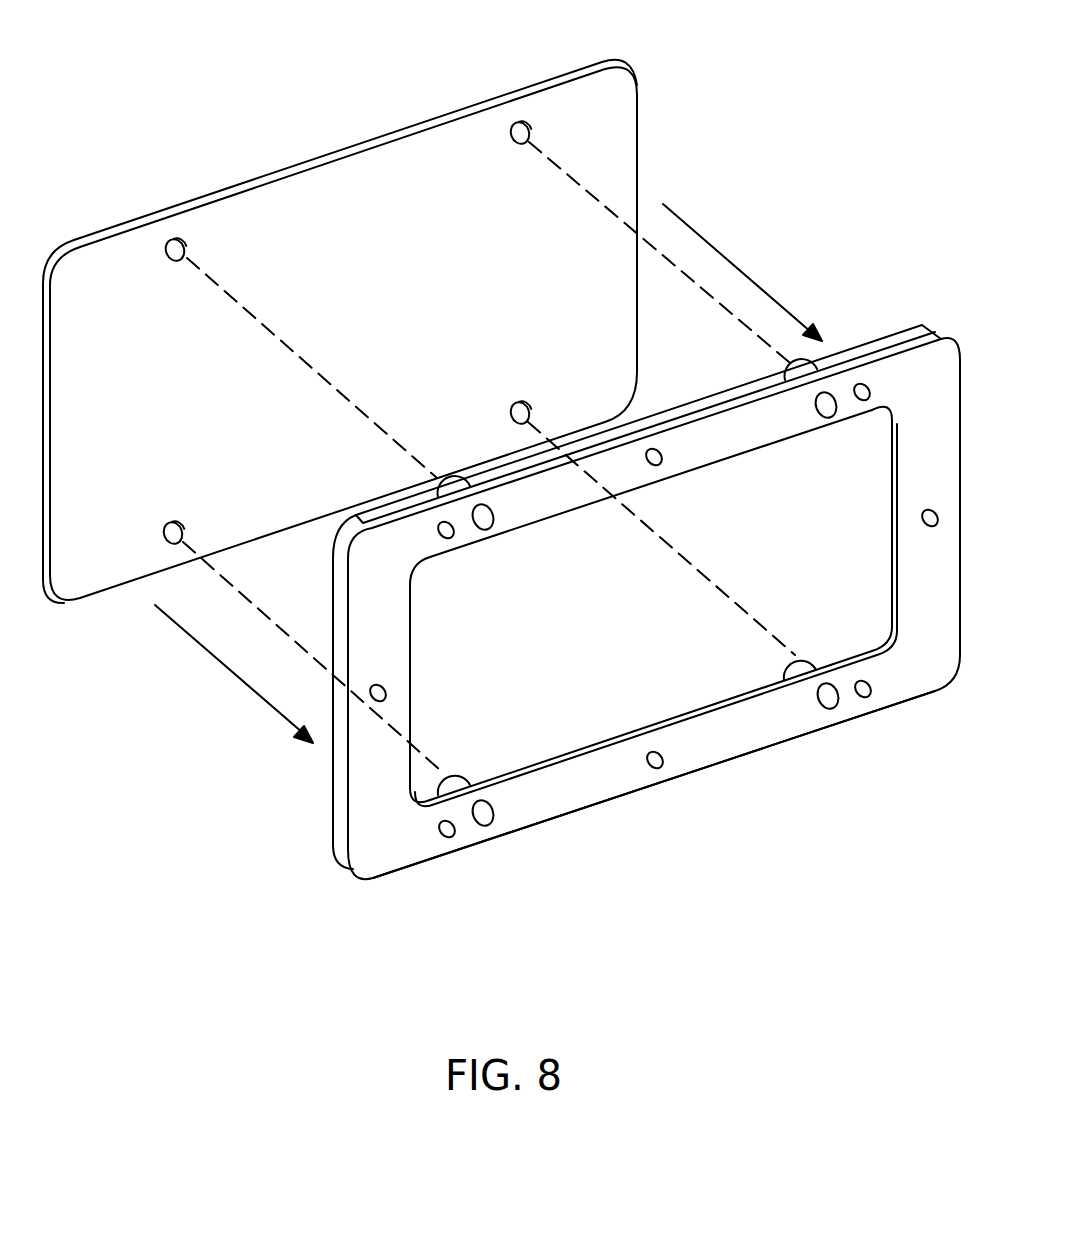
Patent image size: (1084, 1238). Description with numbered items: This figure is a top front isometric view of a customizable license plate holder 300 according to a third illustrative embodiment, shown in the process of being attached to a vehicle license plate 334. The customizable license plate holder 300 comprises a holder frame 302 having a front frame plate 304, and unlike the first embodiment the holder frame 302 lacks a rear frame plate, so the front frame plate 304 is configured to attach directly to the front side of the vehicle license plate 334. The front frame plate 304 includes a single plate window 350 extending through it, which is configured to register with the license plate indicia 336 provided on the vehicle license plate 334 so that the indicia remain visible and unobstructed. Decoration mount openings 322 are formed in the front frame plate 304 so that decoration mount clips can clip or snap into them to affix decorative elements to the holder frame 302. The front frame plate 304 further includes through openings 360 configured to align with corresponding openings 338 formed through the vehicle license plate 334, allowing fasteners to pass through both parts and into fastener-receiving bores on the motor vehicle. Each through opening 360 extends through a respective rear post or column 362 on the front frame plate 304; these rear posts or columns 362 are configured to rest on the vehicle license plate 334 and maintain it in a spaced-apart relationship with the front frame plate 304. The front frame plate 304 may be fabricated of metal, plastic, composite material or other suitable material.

The customizable license plate holder 300 is at (873, 293).
The holder frame 302 is at (766, 753).
The front frame plate 304 is at (567, 790).
The decoration mount opening 322 is at (452, 536).
The vehicle license plate 334 is at (649, 58).
The license plate indicia 336 is at (397, 224).
The openings 338 is at (184, 243).
The single plate window 350 is at (684, 646).
The through openings 360 is at (492, 523).
The rear posts or columns 362 is at (808, 362).